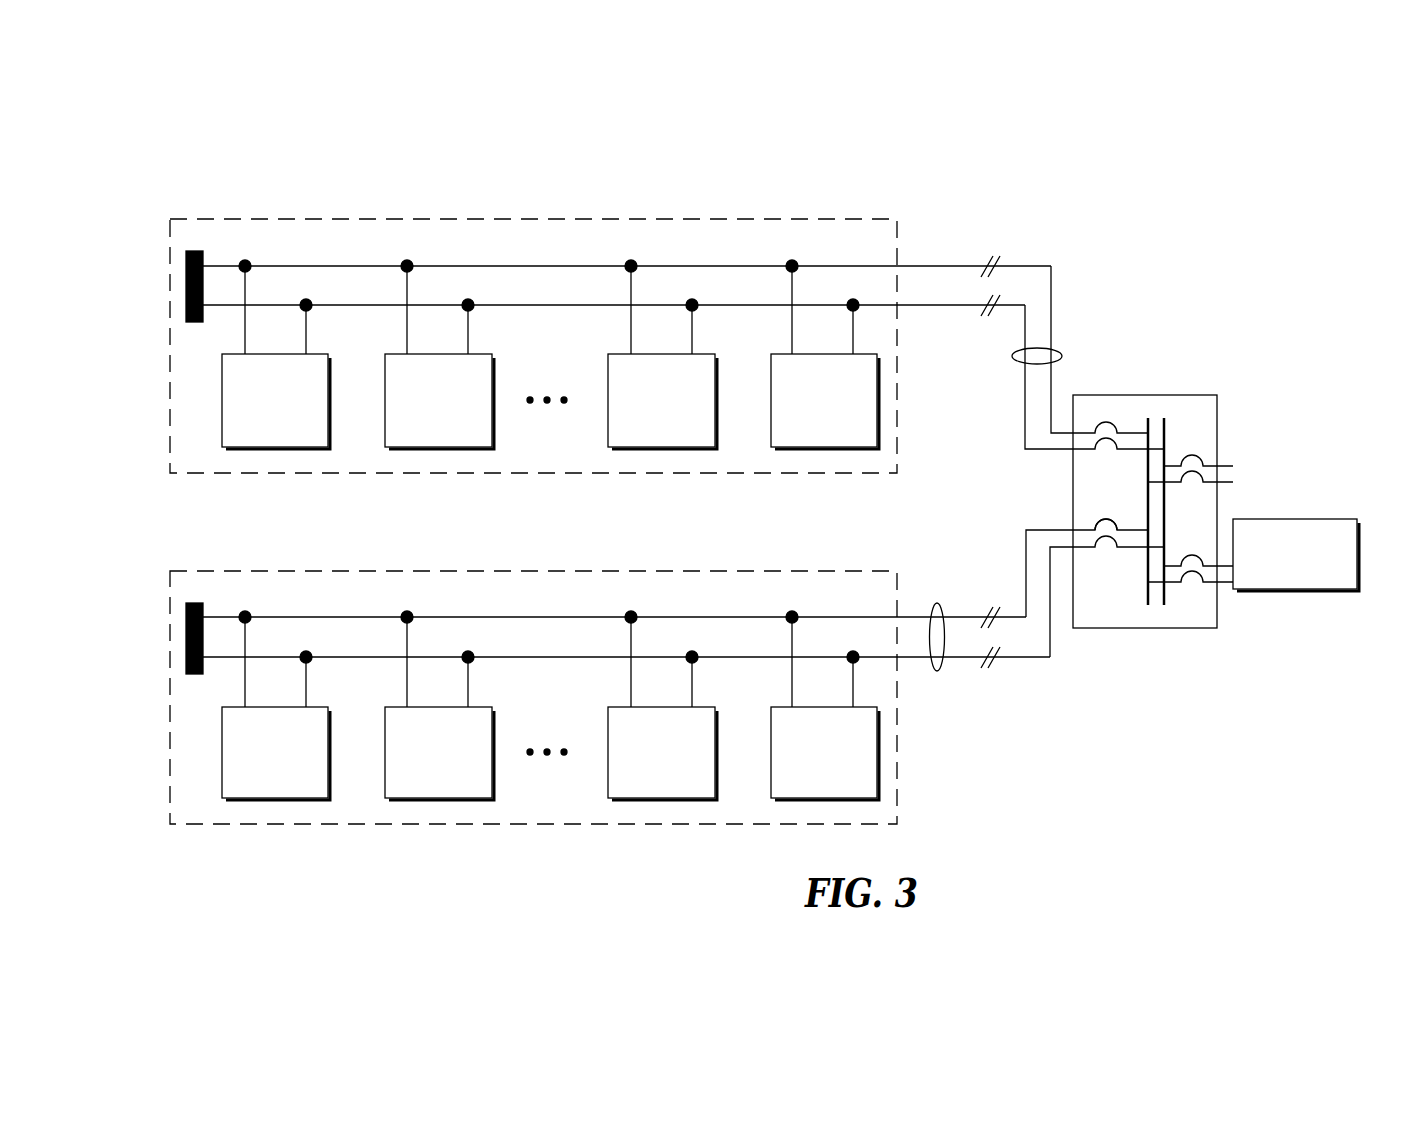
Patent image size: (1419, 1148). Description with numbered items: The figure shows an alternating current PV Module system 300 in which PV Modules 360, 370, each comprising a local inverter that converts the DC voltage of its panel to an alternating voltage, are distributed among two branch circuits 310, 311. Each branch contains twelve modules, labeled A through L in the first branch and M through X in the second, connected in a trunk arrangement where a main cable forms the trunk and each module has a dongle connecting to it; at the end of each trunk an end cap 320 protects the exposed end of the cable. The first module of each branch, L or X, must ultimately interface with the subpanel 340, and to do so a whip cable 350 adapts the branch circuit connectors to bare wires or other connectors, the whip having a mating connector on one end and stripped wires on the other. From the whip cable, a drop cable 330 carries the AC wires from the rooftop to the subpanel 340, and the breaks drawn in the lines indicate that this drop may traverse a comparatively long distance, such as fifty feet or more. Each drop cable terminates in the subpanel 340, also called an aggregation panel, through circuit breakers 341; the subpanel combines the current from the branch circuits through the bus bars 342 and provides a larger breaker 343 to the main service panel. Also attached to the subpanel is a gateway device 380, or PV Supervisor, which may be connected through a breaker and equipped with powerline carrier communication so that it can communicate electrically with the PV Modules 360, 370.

The alternating current PV Module system 300 is at (686, 122).
The branch circuit 310 is at (540, 218).
The branch circuit 311 is at (553, 568).
The end cap 320 is at (182, 277).
The drop cable 330 is at (1060, 350).
The subpanel 340 is at (1175, 395).
The circuit breaker 341 is at (1106, 541).
The bus bars 342 is at (1155, 420).
The larger breaker 343 is at (1197, 448).
The whip cable 350 is at (940, 670).
The PV Module 360 is at (877, 408).
The PV Module 370 is at (877, 760).
The gateway device 380 is at (1302, 590).